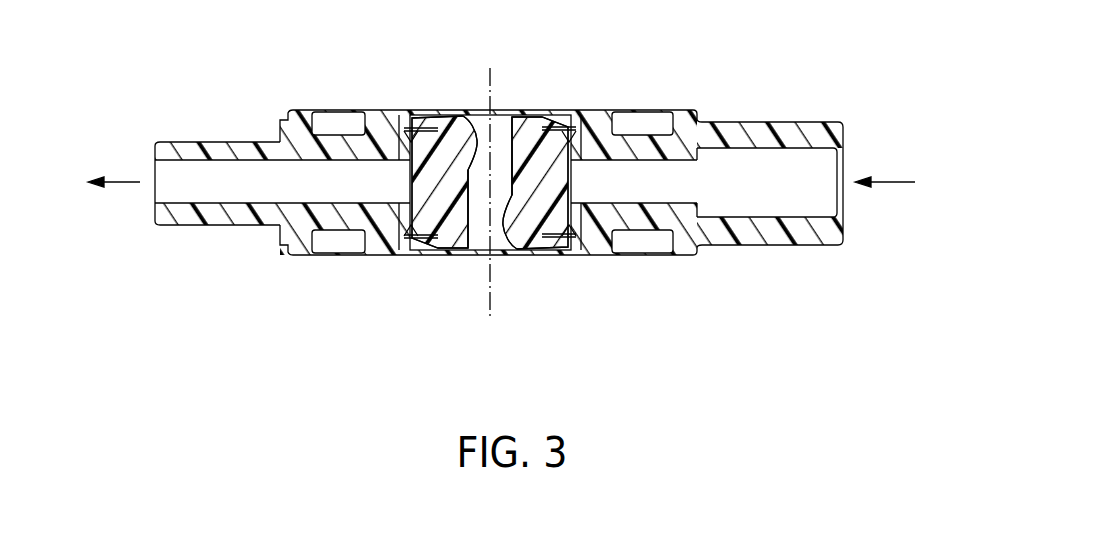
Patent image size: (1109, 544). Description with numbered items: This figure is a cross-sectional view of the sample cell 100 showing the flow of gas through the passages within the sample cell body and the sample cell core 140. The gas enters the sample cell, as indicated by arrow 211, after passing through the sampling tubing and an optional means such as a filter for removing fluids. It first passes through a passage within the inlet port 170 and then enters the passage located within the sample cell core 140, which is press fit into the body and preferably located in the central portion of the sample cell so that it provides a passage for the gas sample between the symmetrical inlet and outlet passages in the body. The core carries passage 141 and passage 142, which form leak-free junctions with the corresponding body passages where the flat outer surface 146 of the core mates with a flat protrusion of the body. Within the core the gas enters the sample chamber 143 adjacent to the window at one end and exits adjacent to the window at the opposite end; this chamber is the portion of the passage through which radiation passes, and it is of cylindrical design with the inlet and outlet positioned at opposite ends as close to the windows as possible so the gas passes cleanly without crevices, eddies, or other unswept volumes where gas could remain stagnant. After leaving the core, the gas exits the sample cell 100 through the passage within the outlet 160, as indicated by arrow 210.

The sample cell 100 is at (509, 244).
The sample cell core 140 is at (477, 182).
The passage 141 is at (448, 148).
The passage 142 is at (520, 221).
The sample chamber 143 is at (495, 125).
The flat outer surface 146 is at (488, 308).
The outlet 160 is at (215, 226).
The inlet port 170 is at (810, 246).
The arrow 210 is at (118, 182).
The arrow 211 is at (888, 182).